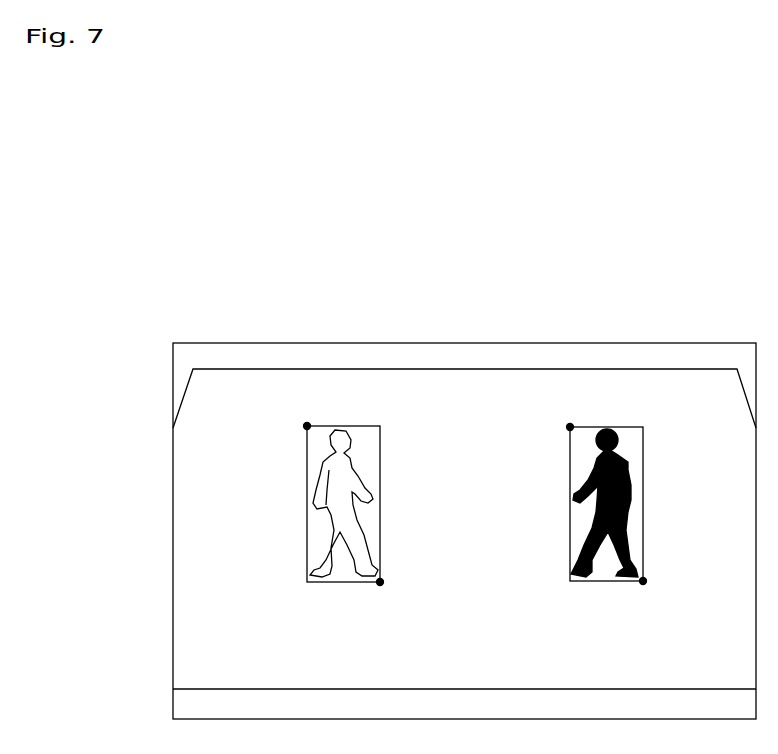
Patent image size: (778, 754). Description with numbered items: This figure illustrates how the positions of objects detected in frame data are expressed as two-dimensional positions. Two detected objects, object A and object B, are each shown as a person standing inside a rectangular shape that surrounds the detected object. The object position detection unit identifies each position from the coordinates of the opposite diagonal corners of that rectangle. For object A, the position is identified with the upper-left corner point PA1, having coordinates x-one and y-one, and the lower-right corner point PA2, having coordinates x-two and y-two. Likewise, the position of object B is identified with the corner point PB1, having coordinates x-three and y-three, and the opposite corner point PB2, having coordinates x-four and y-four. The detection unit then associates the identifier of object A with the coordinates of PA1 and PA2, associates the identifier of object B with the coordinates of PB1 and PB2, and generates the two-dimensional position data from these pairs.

The position PA1 is at (304, 428).
The position PA2 is at (380, 586).
The position PB1 is at (567, 429).
The position PB2 is at (643, 585).
The object A is at (333, 425).
The object B is at (597, 427).